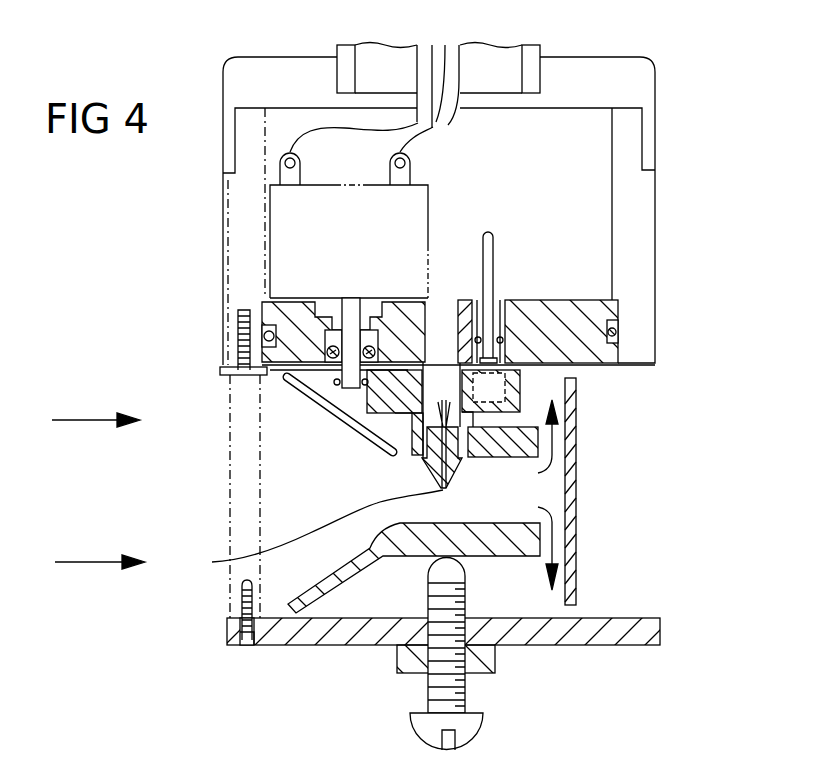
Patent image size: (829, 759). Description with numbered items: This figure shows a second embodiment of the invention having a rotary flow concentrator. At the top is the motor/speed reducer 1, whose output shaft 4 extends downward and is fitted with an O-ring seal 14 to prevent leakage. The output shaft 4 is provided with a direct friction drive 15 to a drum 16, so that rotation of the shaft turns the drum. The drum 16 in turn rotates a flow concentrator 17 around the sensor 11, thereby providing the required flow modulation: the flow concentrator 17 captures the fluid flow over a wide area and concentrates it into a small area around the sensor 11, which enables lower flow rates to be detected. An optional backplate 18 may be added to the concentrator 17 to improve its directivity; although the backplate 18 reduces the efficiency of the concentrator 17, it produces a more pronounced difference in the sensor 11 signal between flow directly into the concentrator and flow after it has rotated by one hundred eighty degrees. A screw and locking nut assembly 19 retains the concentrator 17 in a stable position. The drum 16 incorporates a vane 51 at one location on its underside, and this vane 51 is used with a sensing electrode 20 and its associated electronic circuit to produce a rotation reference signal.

The motor/speed reducer 1 is at (268, 250).
The output shaft 4 is at (368, 403).
The sensor 11 is at (321, 488).
The O-ring seal 14 is at (322, 357).
The direct friction drive 15 is at (336, 381).
The drum 16 is at (352, 415).
The flow concentrator 17 is at (410, 445).
The backplate 18 is at (577, 580).
The screw and locking nut assembly 19 is at (467, 679).
The sensing electrode 20 is at (495, 263).
The vane 51 is at (515, 390).